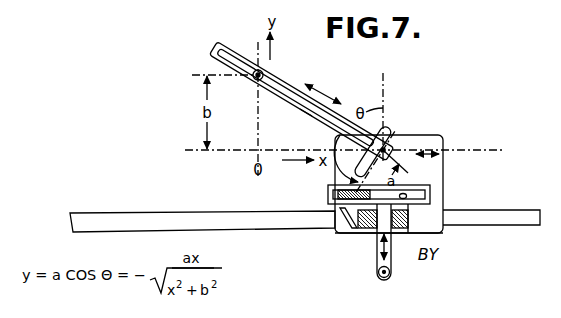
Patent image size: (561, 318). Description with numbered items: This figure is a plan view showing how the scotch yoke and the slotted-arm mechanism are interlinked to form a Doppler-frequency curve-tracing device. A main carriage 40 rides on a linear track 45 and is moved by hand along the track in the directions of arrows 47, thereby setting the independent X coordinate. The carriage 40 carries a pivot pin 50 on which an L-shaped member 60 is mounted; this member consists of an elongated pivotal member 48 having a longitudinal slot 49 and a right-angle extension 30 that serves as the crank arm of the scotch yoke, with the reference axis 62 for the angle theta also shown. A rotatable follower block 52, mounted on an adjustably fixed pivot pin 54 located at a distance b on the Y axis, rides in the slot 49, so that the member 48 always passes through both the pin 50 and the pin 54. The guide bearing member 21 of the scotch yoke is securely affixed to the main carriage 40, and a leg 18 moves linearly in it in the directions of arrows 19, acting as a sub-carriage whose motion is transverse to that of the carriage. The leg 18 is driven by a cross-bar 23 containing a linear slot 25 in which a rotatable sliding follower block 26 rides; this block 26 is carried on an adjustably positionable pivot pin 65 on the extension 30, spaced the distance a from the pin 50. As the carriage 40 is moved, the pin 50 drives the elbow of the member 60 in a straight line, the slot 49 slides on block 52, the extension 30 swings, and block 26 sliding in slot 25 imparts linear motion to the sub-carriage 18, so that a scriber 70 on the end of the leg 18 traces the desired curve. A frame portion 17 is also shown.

The frame 17 is at (413, 206).
The leg 18 is at (391, 263).
The arrows 19 is at (380, 270).
The guide bearing member 21 is at (368, 232).
The cross-bar 23 is at (431, 193).
The linear slot 25 is at (402, 192).
The follower block 26 is at (334, 200).
The right-angle extension 30 is at (348, 228).
The main carriage 40 is at (444, 161).
The linear track 45 is at (504, 210).
The arrows 47 is at (438, 149).
The pivotal member 48 is at (212, 49).
The slot 49 is at (233, 55).
The pivot pin 50 is at (386, 147).
The follower block 52 is at (265, 76).
The pivot pin 54 is at (254, 80).
The L-shaped member 60 is at (302, 117).
The reference axis 62 is at (385, 91).
The pivot pin 65 is at (331, 190).
The scriber 70 is at (389, 278).